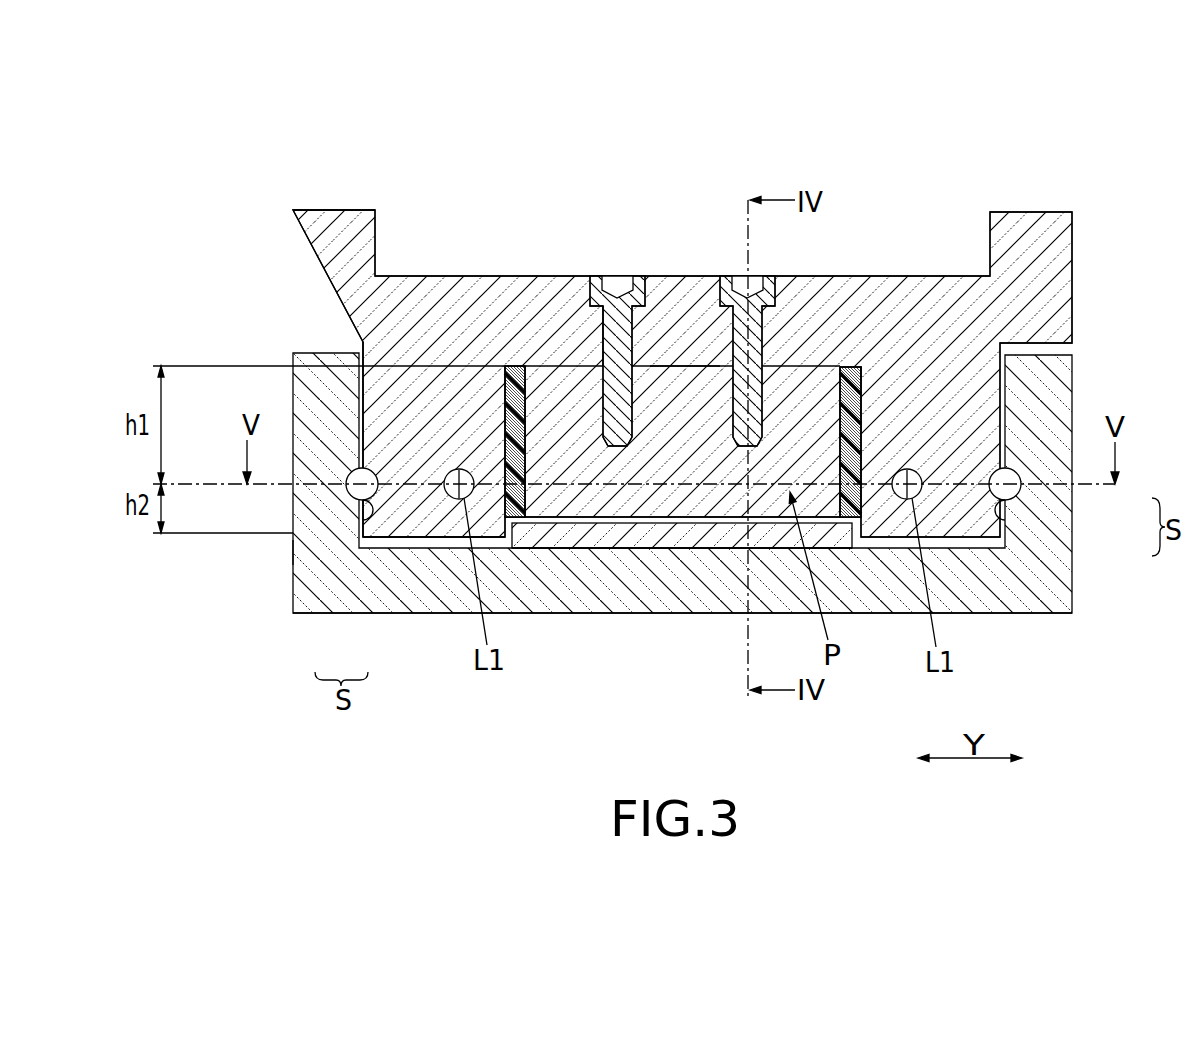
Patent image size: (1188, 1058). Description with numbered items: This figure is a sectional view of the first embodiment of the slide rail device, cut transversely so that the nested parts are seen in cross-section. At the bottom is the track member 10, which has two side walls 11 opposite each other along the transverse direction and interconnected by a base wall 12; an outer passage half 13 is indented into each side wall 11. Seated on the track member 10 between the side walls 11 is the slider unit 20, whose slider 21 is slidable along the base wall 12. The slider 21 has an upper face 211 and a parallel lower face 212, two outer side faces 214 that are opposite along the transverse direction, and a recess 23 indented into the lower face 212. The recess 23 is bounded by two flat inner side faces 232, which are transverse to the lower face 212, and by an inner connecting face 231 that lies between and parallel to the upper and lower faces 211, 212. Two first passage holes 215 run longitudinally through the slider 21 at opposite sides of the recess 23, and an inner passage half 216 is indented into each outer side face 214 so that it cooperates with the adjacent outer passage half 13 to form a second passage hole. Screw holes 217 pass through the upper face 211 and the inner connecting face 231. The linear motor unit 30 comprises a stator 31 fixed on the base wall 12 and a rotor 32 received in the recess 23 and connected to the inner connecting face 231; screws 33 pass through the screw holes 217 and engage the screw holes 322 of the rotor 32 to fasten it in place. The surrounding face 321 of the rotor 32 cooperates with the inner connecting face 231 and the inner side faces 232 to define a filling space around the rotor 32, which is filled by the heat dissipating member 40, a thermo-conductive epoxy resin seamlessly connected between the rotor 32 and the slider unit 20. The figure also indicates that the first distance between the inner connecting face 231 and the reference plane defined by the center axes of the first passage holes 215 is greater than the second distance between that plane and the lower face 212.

The track member 10 is at (289, 589).
The side wall 11 is at (300, 556).
The base wall 12 is at (548, 600).
The outer passage half 13 is at (357, 500).
The slider unit 20 is at (288, 224).
The slider 21 is at (320, 267).
The upper face 211 is at (345, 210).
The lower face 212 is at (408, 537).
The outer side face 214 is at (372, 433).
The first passage hole 215 is at (455, 498).
The inner passage half 216 is at (364, 500).
The screw hole 217 is at (597, 348).
The recess 23 is at (835, 366).
The inner connecting face 231 is at (675, 366).
The inner side face 232 is at (503, 383).
The linear motor unit 30 is at (609, 551).
The stator 31 is at (698, 535).
The rotor 32 is at (517, 385).
The surrounding face 321 is at (845, 372).
The screw hole 322 is at (540, 385).
The screw 33 is at (618, 276).
The heat dissipating member 40 is at (864, 356).